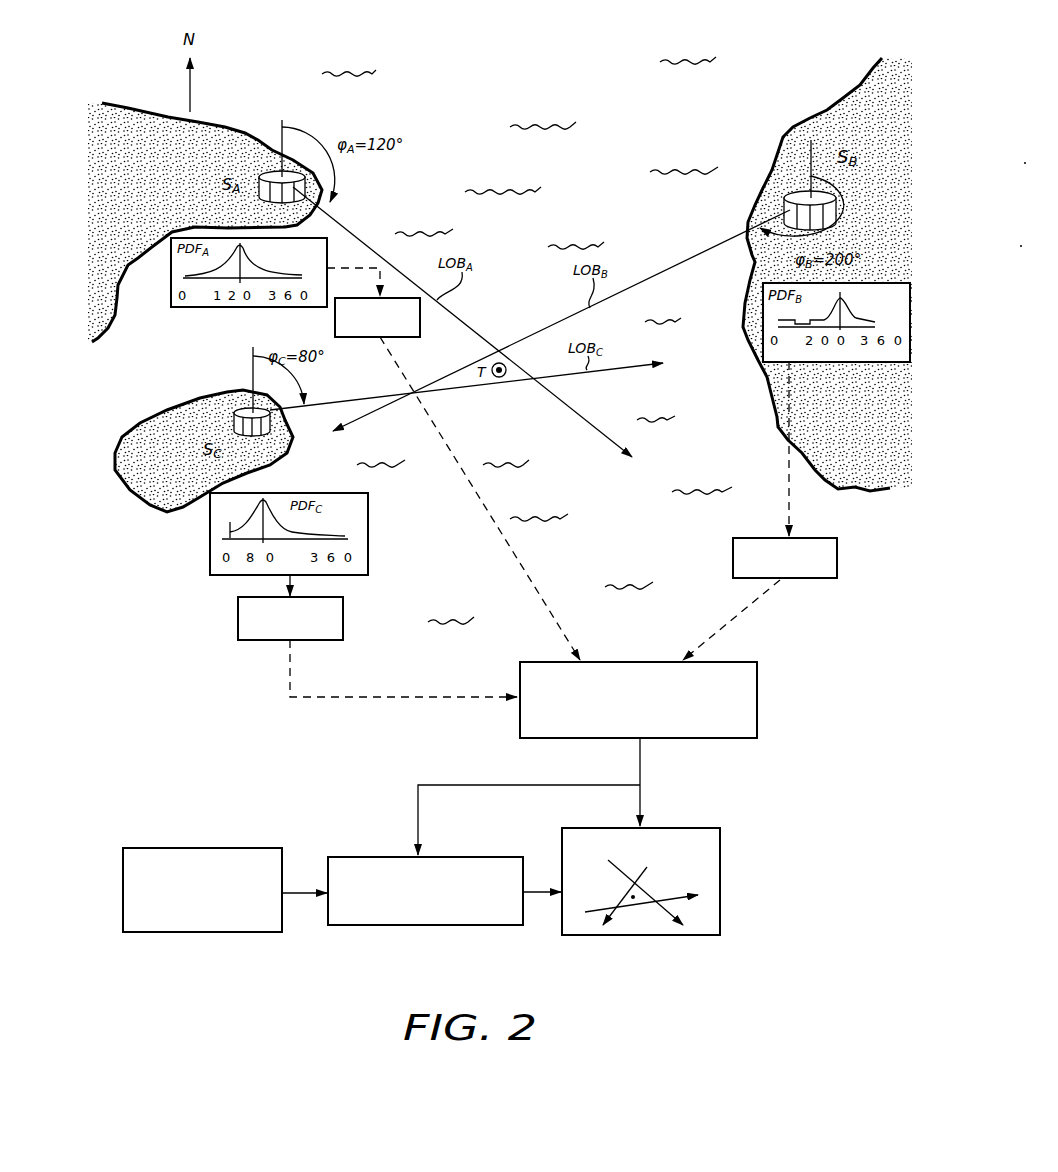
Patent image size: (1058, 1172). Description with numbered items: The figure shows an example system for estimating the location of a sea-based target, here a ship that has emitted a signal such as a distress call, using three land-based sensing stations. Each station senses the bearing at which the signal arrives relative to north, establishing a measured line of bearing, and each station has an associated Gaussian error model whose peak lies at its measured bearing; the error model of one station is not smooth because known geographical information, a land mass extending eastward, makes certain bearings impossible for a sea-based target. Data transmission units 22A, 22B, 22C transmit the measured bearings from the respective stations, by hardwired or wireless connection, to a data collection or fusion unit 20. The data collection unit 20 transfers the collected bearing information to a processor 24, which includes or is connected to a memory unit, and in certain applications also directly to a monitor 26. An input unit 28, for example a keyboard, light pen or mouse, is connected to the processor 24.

The data collection unit 20 is at (757, 688).
The data transmission unit 22A is at (403, 337).
The data transmission unit 22B is at (733, 552).
The data transmission unit 22C is at (343, 616).
The processor 24 is at (476, 857).
The monitor 26 is at (720, 858).
The input unit 28 is at (218, 848).